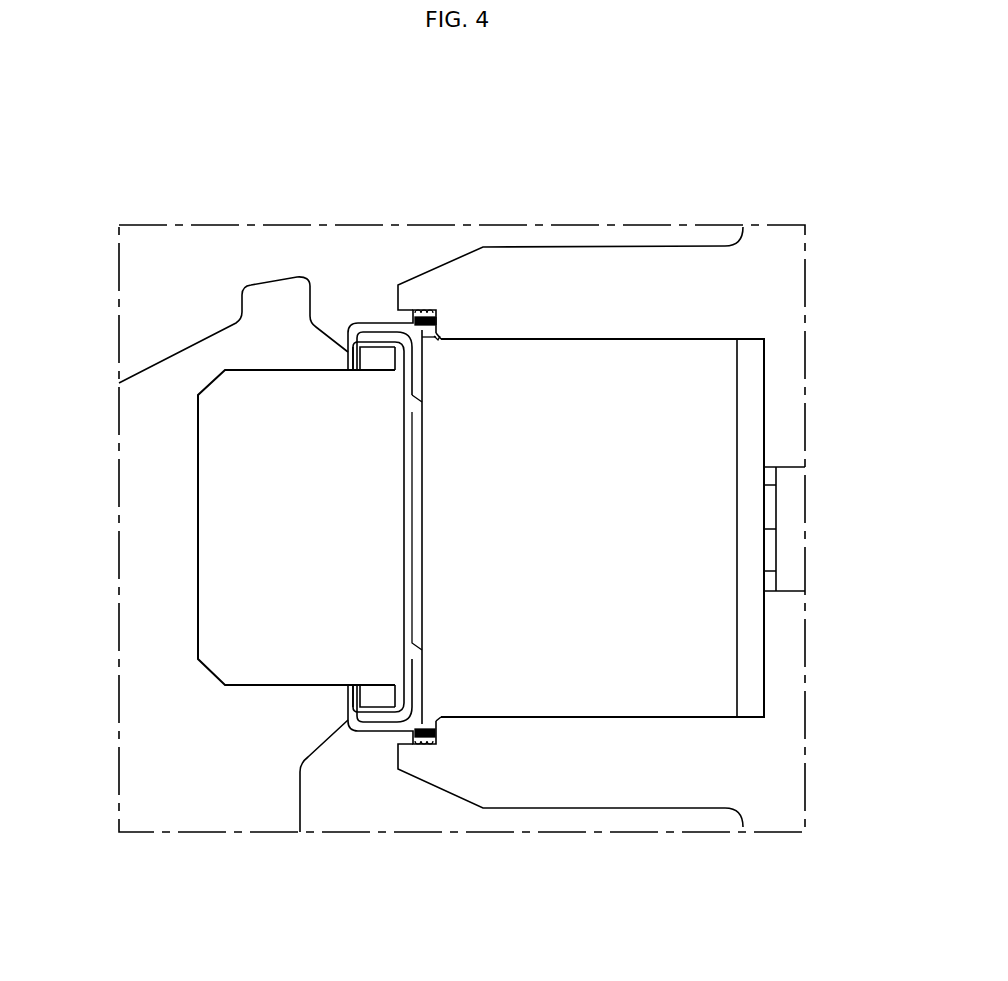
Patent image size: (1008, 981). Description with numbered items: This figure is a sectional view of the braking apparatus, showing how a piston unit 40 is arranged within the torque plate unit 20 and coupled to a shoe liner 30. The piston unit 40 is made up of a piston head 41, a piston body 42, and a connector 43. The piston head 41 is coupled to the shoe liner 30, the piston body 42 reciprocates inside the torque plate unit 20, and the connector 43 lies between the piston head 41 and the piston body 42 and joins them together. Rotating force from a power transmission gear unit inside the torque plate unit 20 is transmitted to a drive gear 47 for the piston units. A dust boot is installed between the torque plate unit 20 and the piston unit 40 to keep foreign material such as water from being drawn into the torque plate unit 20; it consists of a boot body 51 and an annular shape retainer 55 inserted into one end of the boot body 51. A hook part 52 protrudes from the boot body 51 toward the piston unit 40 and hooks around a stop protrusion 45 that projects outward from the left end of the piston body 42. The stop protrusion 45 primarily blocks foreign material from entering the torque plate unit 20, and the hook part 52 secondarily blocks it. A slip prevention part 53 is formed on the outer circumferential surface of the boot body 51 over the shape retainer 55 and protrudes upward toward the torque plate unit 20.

The torque plate unit 20 is at (746, 300).
The shoe liner 30 is at (150, 463).
The piston unit 40 is at (263, 562).
The piston head 41 is at (275, 653).
The piston body 42 is at (598, 640).
The connector 43 is at (398, 627).
The stop protrusion 45 is at (430, 337).
The drive gear 47 is at (792, 545).
The boot body 51 is at (376, 322).
The hook part 52 is at (438, 339).
The slip prevention part 53 is at (418, 310).
The shape retainer 55 is at (436, 322).